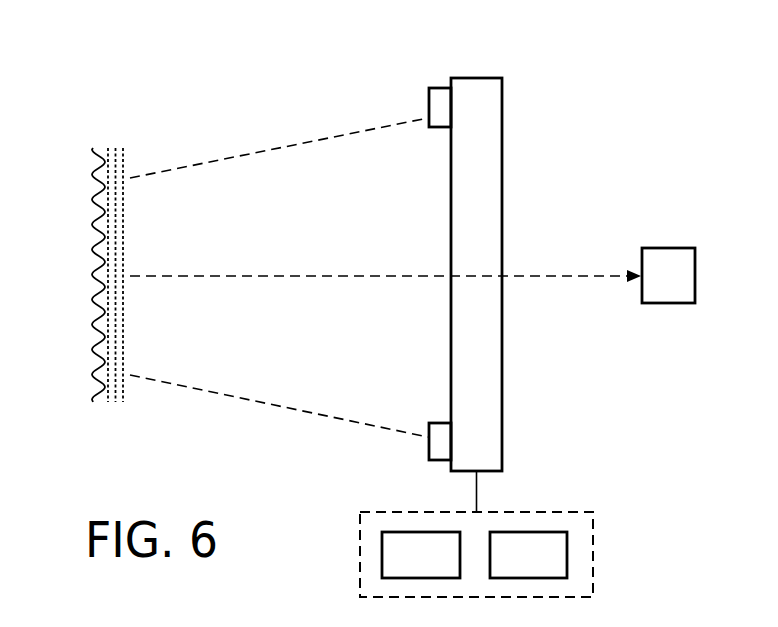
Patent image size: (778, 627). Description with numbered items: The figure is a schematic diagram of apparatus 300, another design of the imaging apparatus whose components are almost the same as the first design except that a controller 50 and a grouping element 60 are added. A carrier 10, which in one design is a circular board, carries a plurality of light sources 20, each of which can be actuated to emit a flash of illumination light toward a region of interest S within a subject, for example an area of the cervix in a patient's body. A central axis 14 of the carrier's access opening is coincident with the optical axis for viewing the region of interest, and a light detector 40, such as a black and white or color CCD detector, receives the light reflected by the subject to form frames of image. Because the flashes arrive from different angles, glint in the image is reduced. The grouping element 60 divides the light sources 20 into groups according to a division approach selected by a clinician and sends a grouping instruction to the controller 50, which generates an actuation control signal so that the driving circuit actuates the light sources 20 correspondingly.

The apparatus 300 is at (137, 68).
The region of interest S is at (107, 296).
The carrier 10 is at (476, 77).
The central axis 14 is at (324, 275).
The light sources 20 is at (440, 87).
The light detector 40 is at (668, 247).
The controller 50 is at (434, 568).
The grouping element 60 is at (542, 568).